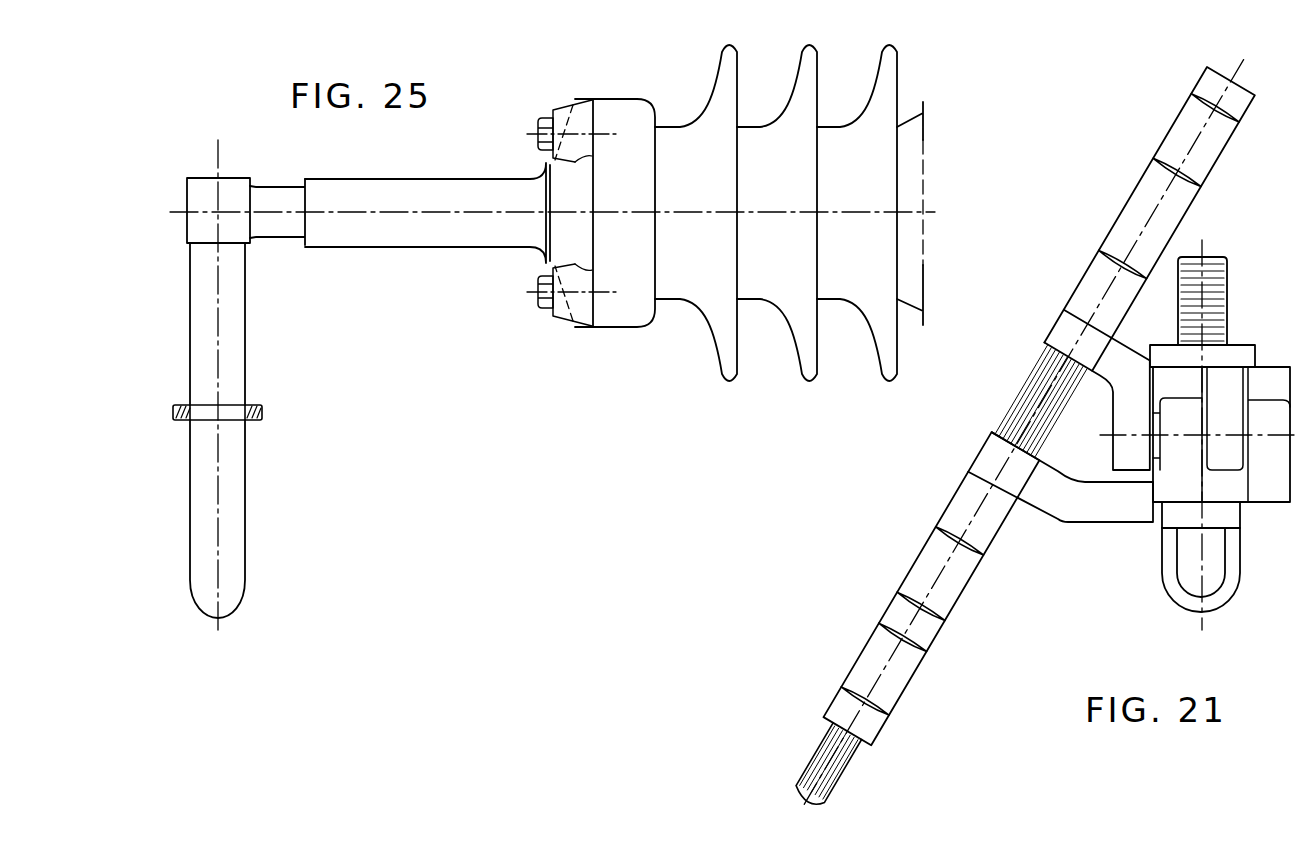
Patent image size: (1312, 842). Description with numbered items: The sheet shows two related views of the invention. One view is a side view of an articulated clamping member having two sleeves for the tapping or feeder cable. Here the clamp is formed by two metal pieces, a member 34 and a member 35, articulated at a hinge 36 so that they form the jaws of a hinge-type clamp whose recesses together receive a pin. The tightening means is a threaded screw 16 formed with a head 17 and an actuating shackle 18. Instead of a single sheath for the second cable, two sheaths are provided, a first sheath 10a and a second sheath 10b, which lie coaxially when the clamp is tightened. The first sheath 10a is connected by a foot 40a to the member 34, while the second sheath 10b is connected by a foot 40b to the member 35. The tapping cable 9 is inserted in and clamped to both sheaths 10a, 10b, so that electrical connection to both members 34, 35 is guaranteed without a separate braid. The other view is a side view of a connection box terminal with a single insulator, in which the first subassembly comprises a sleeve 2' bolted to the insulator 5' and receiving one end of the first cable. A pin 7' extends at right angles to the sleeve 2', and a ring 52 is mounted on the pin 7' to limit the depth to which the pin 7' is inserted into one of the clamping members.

In FIG. 25, the sleeve 2' is at (427, 194).
In FIG. 25, the insulator 5' is at (789, 228).
In FIG. 25, the pin 7' is at (199, 430).
In FIG. 25, the ring 52 is at (260, 412).
In FIG. 21, the tapping cable 9 is at (818, 750).
In FIG. 21, the first sheath 10a is at (928, 632).
In FIG. 21, the second sheath 10b is at (1149, 178).
In FIG. 21, the threaded screw 16 is at (1227, 298).
In FIG. 21, the head 17 is at (1160, 524).
In FIG. 21, the actuating shackle 18 is at (1225, 596).
In FIG. 21, the clamp member 34 is at (1275, 488).
In FIG. 21, the clamp member 35 is at (1270, 378).
In FIG. 21, the hinge 36 is at (1248, 423).
In FIG. 21, the foot 40a is at (1075, 512).
In FIG. 21, the foot 40b is at (1112, 356).